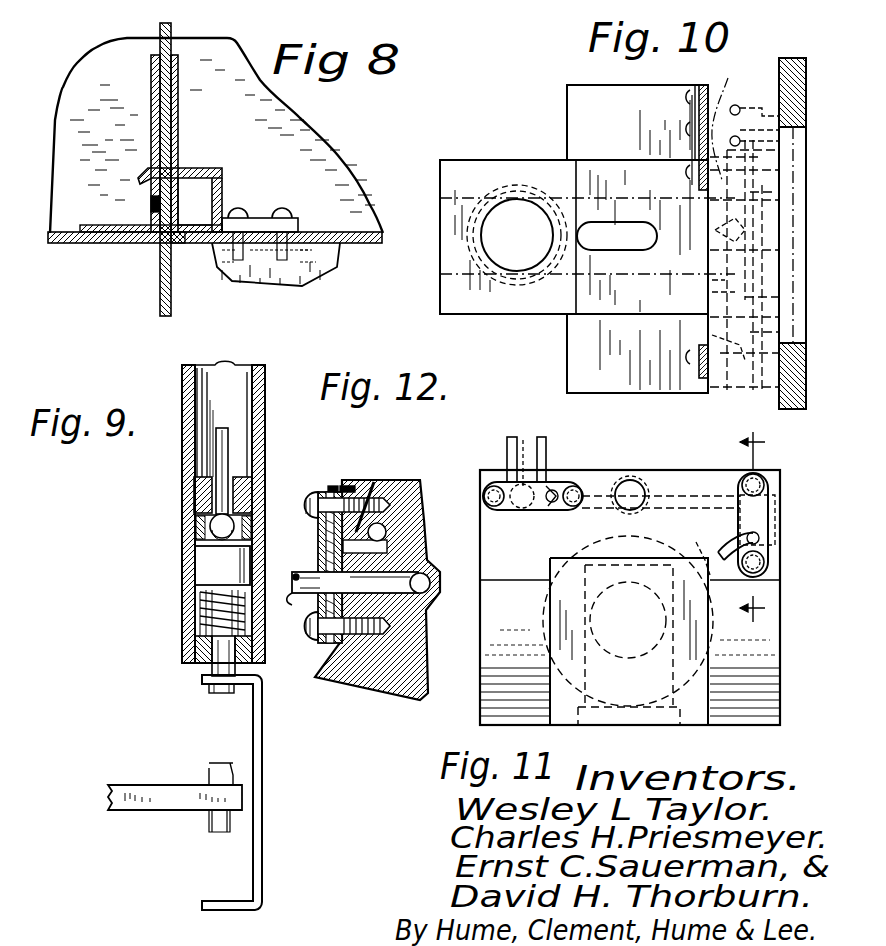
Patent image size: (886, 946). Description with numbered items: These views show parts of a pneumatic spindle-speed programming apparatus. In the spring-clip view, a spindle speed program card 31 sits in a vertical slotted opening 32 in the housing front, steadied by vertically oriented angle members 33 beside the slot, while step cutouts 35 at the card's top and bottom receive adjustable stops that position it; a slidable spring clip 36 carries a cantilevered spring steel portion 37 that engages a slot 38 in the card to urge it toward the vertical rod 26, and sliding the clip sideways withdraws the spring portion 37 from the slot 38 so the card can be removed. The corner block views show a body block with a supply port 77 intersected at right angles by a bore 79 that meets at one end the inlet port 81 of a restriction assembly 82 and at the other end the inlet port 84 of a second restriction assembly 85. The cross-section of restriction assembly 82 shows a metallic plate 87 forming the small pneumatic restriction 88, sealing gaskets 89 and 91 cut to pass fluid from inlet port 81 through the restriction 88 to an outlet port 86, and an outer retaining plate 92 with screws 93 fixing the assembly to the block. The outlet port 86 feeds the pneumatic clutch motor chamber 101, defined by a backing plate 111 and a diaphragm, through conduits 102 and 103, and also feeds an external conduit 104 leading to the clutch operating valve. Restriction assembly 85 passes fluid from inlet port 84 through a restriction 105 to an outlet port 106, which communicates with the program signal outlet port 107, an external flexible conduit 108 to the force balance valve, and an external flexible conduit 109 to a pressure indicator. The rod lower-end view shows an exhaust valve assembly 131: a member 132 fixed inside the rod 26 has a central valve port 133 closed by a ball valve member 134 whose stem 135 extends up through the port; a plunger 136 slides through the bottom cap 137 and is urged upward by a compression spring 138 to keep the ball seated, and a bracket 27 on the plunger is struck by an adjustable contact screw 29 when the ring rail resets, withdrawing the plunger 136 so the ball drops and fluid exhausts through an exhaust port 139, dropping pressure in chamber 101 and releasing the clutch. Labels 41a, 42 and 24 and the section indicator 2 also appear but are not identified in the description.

In FIG. 8, the spindle speed program card 31 is at (160, 278).
In FIG. 8, the vertical slotted opening 32 is at (176, 244).
In FIG. 8, the angle members 33 is at (151, 100).
In FIG. 8, the step cutouts 35 is at (178, 108).
In FIG. 8, the slidable spring clip 36 is at (222, 194).
In FIG. 8, the cantilevered forward spring steel portion 37 is at (186, 168).
In FIG. 8, the slot 38 is at (151, 200).
In FIG. 10, the housing 41a is at (524, 17).
In FIG. 10, the bore 42 is at (504, 215).
In FIG. 10, the supply port 77 is at (780, 200).
In FIG. 11, the supply port 77 is at (632, 480).
In FIG. 10, the bore 79 is at (722, 296).
In FIG. 12, the bore 79 is at (386, 530).
In FIG. 11, the bore 79 is at (668, 496).
In FIG. 10, the inlet port 81 is at (712, 335).
In FIG. 12, the inlet port 81 is at (376, 482).
In FIG. 11, the inlet port 81 is at (770, 518).
In FIG. 10, the restriction assembly 82 is at (692, 364).
In FIG. 12, the restriction assembly 82 is at (325, 478).
In FIG. 10, the inlet port 84 is at (698, 128).
In FIG. 10, the restriction assembly 85 is at (692, 107).
In FIG. 11, the restriction assembly 85 is at (492, 480).
In FIG. 12, the outlet port 86 is at (392, 608).
In FIG. 12, the metallic plate 87 is at (318, 550).
In FIG. 12, the pneumatic restriction 88 is at (318, 560).
In FIG. 12, the sealing gasket 89 is at (347, 486).
In FIG. 12, the sealing gasket 91 is at (334, 486).
In FIG. 12, the outer retaining plate 92 is at (314, 645).
In FIG. 12, the screws 93 is at (313, 496).
In FIG. 10, the pneumatic clutch motor chamber 101 is at (770, 268).
In FIG. 11, the pneumatic clutch motor chamber 101 is at (565, 575).
In FIG. 12, the conduit 102 is at (432, 570).
In FIG. 11, the conduit 102 is at (720, 548).
In FIG. 11, the conduit 103 is at (696, 542).
In FIG. 12, the external conduit 104 is at (306, 608).
In FIG. 11, the restriction 105 is at (554, 504).
In FIG. 10, the outlet port 106 is at (737, 113).
In FIG. 11, the outlet port 106 is at (520, 512).
In FIG. 10, the program signal outlet port 107 is at (806, 104).
In FIG. 11, the program signal outlet port 107 is at (525, 438).
In FIG. 10, the external flexible conduit 108 is at (738, 105).
In FIG. 11, the external flexible conduit 108 is at (510, 440).
In FIG. 10, the external flexible conduit 109 is at (806, 138).
In FIG. 11, the external flexible conduit 109 is at (546, 445).
In FIG. 10, the backing plate 111 is at (790, 332).
In FIG. 11, the section line 2 is at (752, 528).
In FIG. 11, the screw 24 is at (556, 482).
In FIG. 9, the vertical rod 26 is at (182, 380).
In FIG. 9, the bracket 27 is at (262, 755).
In FIG. 9, the adjustable contact screw 29 is at (208, 775).
In FIG. 9, the exhaust valve assembly 131 is at (178, 510).
In FIG. 9, the member 132 is at (195, 490).
In FIG. 9, the central valve port 133 is at (207, 472).
In FIG. 9, the ball valve member 134 is at (200, 540).
In FIG. 9, the stem 135 is at (223, 428).
In FIG. 9, the plunger 136 is at (204, 660).
In FIG. 9, the bottom cap 137 is at (255, 678).
In FIG. 9, the compression spring 138 is at (205, 620).
In FIG. 9, the exhaust port 139 is at (210, 528).